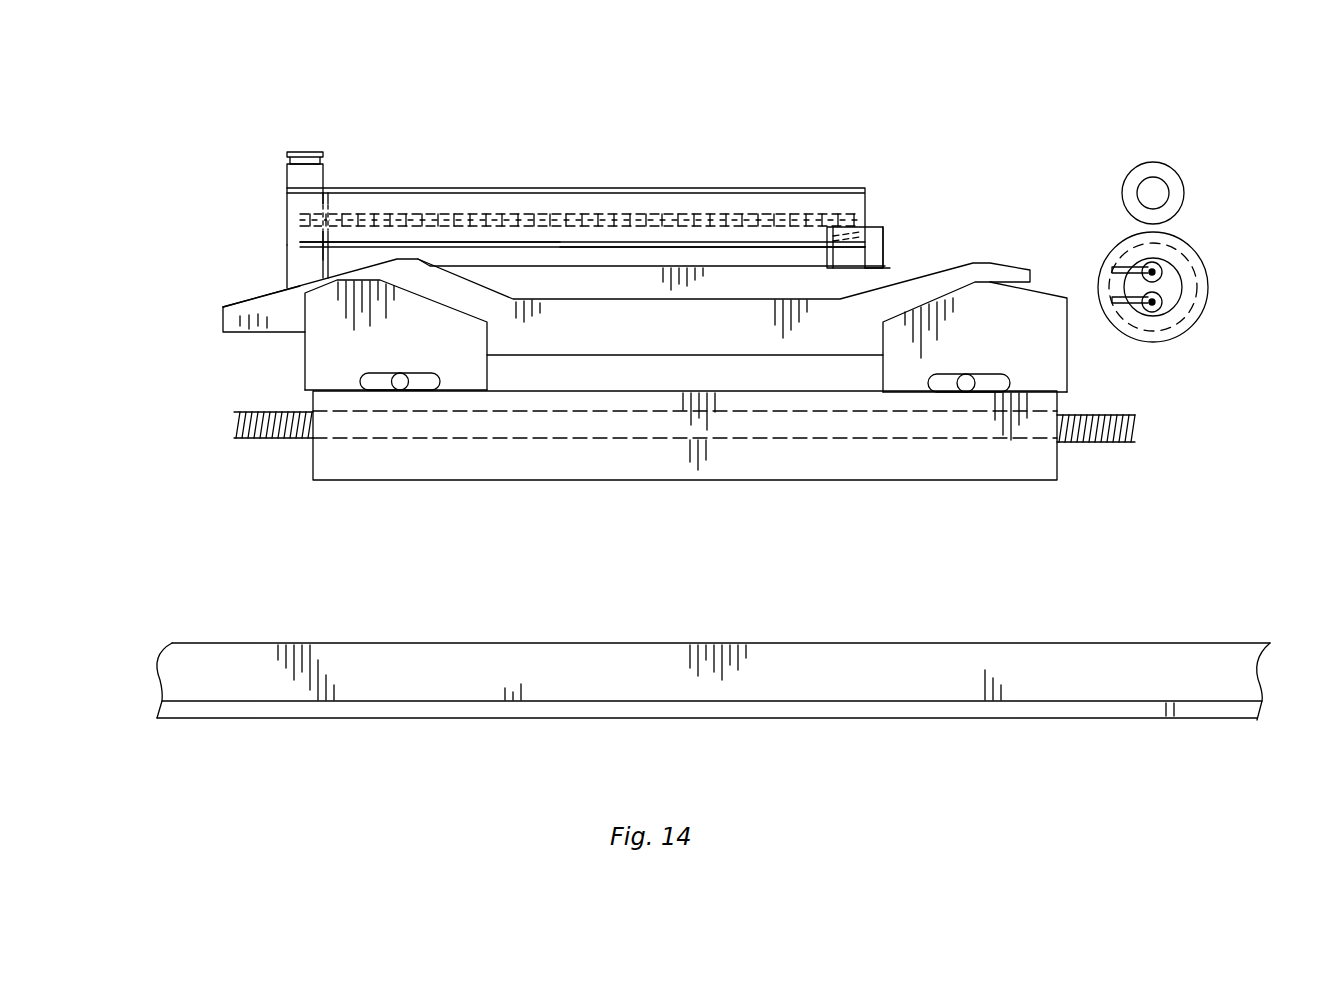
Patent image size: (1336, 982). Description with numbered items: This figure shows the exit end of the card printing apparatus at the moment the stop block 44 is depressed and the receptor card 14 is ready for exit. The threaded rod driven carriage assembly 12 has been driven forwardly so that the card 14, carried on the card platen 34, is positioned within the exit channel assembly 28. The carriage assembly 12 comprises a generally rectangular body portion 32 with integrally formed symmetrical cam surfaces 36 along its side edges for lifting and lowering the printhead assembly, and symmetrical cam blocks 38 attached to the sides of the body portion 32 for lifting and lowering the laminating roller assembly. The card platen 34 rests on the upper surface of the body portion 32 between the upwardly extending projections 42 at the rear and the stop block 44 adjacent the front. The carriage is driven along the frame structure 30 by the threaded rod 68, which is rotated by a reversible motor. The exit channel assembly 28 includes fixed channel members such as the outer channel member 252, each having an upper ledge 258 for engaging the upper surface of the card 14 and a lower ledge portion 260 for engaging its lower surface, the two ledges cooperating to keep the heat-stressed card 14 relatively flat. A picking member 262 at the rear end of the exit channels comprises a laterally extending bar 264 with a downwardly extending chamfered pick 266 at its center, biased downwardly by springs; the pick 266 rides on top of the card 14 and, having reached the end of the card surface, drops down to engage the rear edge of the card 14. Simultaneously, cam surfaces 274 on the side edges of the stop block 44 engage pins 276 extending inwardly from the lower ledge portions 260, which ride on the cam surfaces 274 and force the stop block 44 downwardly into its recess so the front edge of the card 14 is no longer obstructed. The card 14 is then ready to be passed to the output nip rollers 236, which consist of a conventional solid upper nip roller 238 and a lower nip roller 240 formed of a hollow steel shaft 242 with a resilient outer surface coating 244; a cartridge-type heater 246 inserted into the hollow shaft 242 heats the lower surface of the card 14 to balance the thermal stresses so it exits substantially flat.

The carriage assembly 12 is at (728, 481).
The receptor card 14 is at (405, 240).
The exit channel assembly 28 is at (550, 293).
The frame structure 30 is at (1053, 658).
The body portion 32 is at (432, 495).
The card platen 34 is at (342, 257).
The cam surfaces 36 is at (985, 262).
The cam blocks 38 is at (330, 355).
The projections 42 is at (305, 255).
The stop block 44 is at (888, 256).
The threaded rod 68 is at (1105, 442).
The output nip rollers 236 is at (1124, 125).
The upper nip roller 238 is at (1180, 175).
The lower nip roller 240 is at (1228, 278).
The hollow steel shaft 242 is at (1190, 313).
The resilient outer surface coating 244 is at (1190, 250).
The cartridge-type heater 246 is at (1163, 296).
The outer fixed channel member 252 is at (772, 176).
The upper ledge 258 is at (555, 212).
The lower ledge portion 260 is at (548, 243).
The picking member 262 is at (300, 152).
The bar 264 is at (300, 170).
The chamfered pick 266 is at (312, 214).
The cam surfaces 274 is at (880, 247).
The pins 276 is at (858, 228).